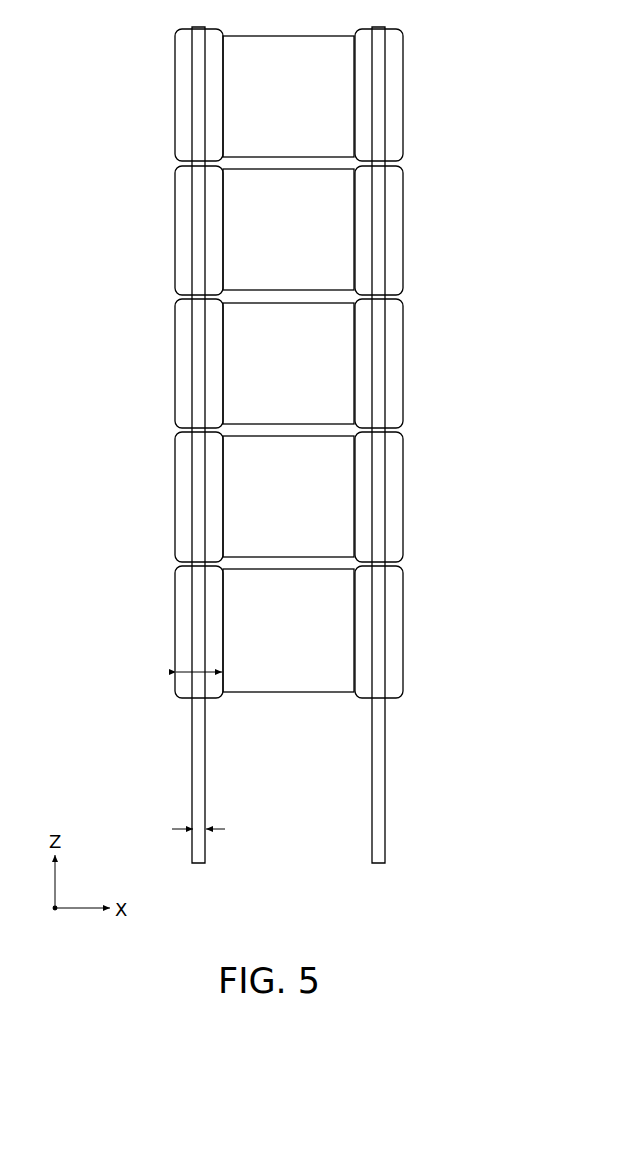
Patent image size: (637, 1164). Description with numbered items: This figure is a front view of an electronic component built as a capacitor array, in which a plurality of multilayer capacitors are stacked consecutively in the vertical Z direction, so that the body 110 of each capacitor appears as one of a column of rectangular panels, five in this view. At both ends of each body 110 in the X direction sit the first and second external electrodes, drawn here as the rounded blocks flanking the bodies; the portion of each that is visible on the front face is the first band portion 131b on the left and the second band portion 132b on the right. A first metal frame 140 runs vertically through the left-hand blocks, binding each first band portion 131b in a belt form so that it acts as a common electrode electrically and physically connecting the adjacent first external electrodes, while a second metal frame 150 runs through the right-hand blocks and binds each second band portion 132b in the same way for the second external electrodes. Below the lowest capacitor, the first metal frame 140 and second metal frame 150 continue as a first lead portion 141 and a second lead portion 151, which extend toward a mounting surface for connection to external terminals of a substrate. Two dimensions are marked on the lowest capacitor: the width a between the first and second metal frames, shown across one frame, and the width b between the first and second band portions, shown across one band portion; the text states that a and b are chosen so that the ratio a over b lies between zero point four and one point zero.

The body 110 is at (287, 692).
The first band portion 131b is at (180, 627).
The second band portion 132b is at (398, 627).
The first metal frame 140 is at (199, 598).
The first lead portion 141 is at (193, 775).
The second metal frame 150 is at (378, 597).
The second lead portion 151 is at (385, 775).
The width between the first and second metal frames a is at (197, 834).
The width between the first and second band portions b is at (197, 672).